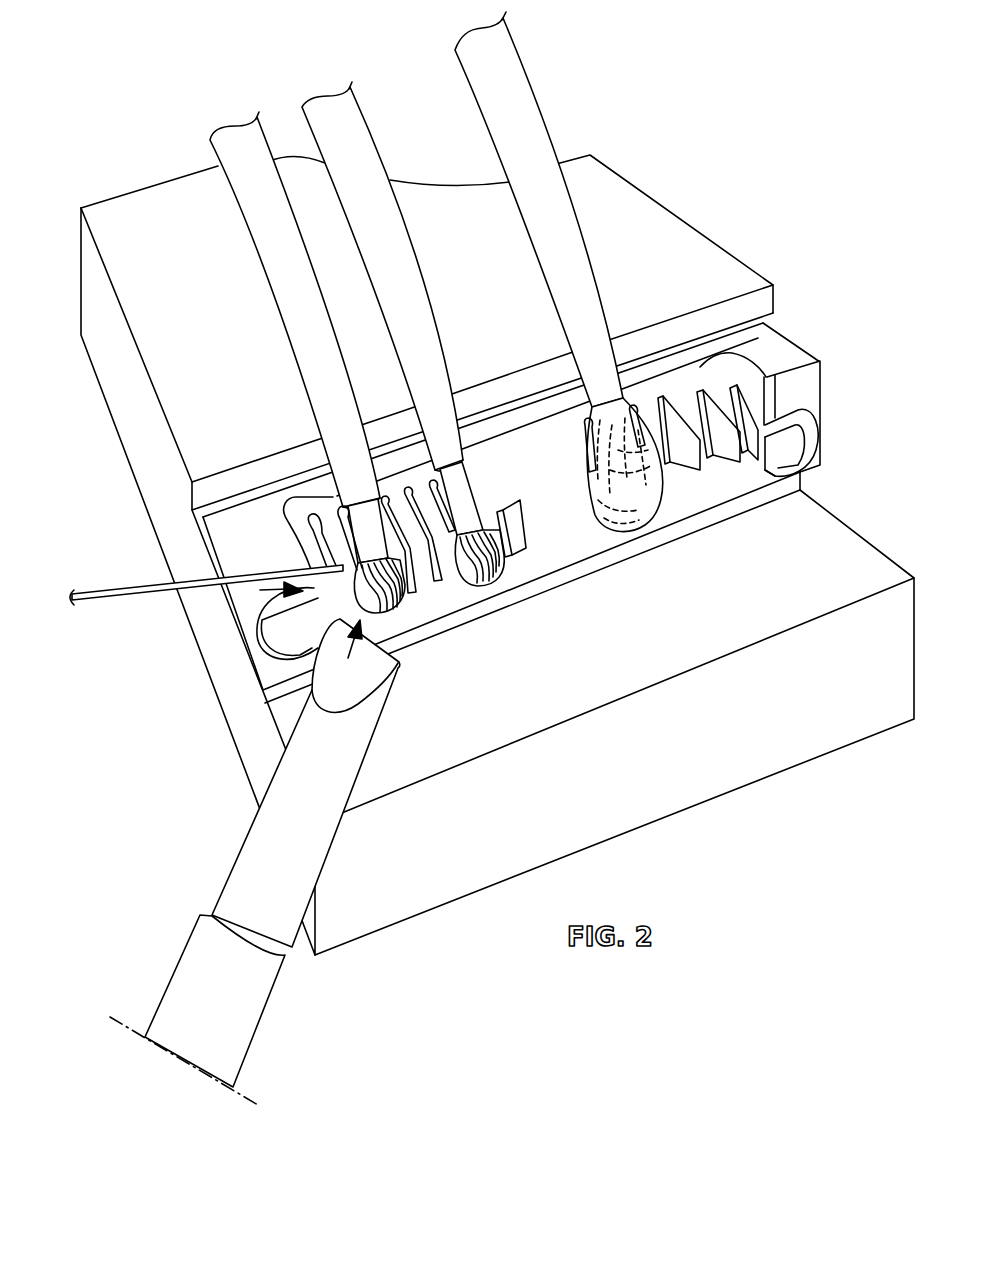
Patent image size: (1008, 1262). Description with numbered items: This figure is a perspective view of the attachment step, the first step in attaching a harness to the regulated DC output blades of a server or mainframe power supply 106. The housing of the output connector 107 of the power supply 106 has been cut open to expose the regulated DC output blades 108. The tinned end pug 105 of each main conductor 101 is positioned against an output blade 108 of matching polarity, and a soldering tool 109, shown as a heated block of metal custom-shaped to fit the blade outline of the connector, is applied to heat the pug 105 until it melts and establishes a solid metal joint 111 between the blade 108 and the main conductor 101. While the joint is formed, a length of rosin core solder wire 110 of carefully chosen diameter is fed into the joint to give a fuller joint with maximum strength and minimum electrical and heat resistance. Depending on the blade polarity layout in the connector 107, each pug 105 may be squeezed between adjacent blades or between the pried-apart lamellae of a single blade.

The main conductor 101 is at (243, 209).
The tinned end pug 105 is at (390, 597).
The power supply 106 is at (175, 388).
The output connector 107 is at (820, 362).
The regulated DC output blade 108 is at (738, 458).
The soldering tool 109 is at (248, 848).
The rosin core solder wire 110 is at (140, 603).
The solid metal joint 111 is at (627, 502).